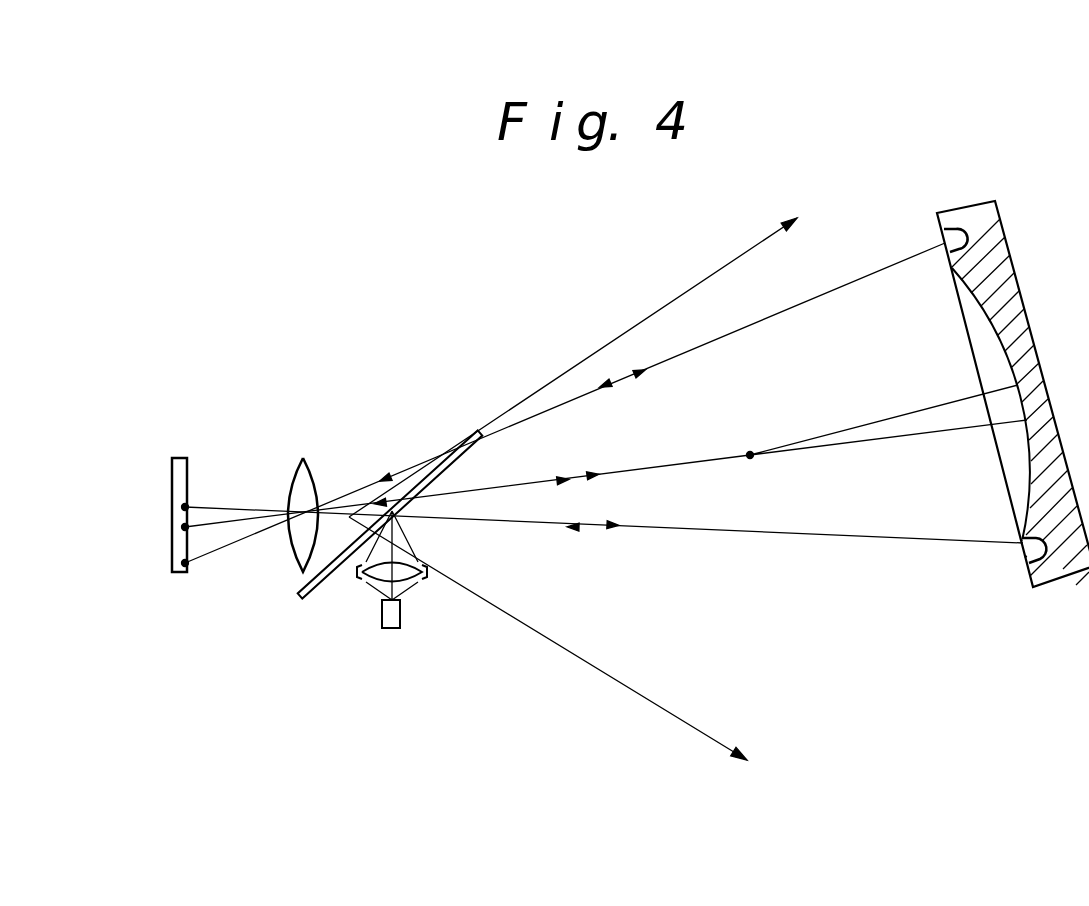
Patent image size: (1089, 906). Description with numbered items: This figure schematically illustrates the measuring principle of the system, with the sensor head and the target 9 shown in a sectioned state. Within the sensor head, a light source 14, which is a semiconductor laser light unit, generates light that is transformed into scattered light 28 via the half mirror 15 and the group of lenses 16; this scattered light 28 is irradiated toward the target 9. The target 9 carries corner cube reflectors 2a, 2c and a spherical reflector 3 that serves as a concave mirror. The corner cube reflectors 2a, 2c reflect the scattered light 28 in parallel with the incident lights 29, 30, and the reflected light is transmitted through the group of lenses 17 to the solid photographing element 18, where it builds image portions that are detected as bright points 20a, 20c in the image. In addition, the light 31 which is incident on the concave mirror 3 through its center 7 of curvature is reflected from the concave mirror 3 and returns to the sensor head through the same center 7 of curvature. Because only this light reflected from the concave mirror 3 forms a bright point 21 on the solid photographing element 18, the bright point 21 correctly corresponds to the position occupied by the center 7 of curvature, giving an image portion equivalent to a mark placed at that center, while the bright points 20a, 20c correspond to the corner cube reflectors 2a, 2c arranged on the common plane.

The target 9 is at (988, 201).
The spherical reflector 3 is at (982, 316).
The corner cube reflector 2a is at (944, 242).
The corner cube reflector 2c is at (1023, 562).
The center of curvature 7 is at (751, 452).
The light source 14 is at (402, 618).
The half mirror 15 is at (475, 430).
The group of lenses 16 is at (425, 569).
The group of lenses 17 is at (304, 458).
The solid photographing element 18 is at (176, 458).
The bright point 20a is at (188, 565).
The bright point 20c is at (188, 505).
The bright point 21 is at (188, 529).
The scattered light 28 is at (690, 292).
The incident light 29 is at (735, 329).
The incident light 30 is at (741, 534).
The light 31 is at (671, 465).